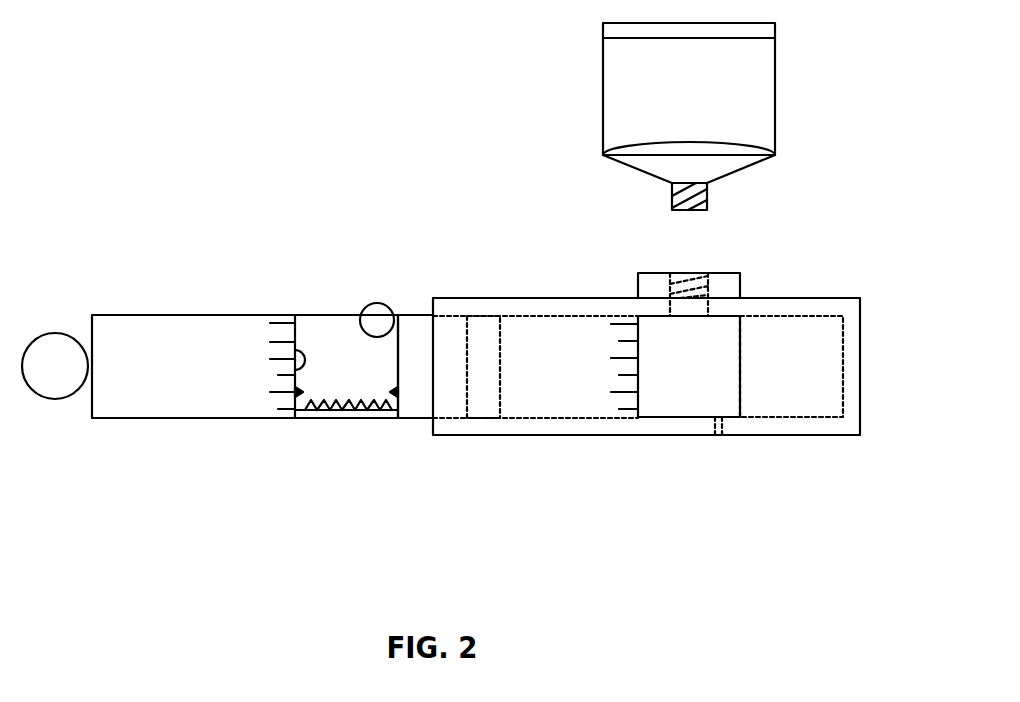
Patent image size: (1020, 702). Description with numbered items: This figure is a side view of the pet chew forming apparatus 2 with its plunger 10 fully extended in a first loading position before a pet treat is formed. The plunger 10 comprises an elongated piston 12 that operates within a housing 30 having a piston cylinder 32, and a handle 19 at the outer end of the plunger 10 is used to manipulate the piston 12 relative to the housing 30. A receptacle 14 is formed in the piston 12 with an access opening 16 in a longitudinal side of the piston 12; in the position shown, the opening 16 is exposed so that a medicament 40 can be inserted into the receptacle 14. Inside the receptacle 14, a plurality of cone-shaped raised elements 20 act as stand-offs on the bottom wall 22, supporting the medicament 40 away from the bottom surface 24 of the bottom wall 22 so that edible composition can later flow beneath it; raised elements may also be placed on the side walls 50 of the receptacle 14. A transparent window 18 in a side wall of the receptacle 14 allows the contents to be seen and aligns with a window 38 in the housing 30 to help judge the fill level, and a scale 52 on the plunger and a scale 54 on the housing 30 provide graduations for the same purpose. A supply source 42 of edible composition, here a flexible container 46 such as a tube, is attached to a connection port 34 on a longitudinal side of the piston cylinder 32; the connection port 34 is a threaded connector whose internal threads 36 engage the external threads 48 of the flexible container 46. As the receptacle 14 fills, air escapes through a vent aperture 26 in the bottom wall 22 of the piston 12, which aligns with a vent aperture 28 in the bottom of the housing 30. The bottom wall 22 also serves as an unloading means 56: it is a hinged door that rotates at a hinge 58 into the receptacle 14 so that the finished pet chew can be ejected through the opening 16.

The pet chew forming apparatus 2 is at (168, 157).
The plunger 10 is at (197, 290).
The elongated piston 12 is at (142, 417).
The receptacle 14 is at (303, 253).
The access opening 16 is at (340, 317).
The window 18 is at (318, 367).
The handle 19 is at (55, 366).
The raised elements 20 is at (300, 410).
The bottom wall 22 is at (358, 410).
The bottom surface 24 is at (318, 410).
The vent aperture 26 is at (377, 410).
The vent aperture 28 is at (720, 435).
The housing 30 is at (823, 283).
The piston cylinder 32 is at (790, 365).
The connection port 34 is at (637, 273).
The internal threads 36 is at (705, 275).
The window 38 is at (675, 392).
The medicament 40 is at (380, 330).
The supply source 42 is at (585, 110).
The flexible container 46 is at (687, 83).
The external threads 48 is at (707, 200).
The side walls 50 is at (295, 350).
The scale 52 is at (255, 393).
The scale 54 is at (602, 393).
The unloading means 56 is at (343, 432).
The hinge 58 is at (398, 413).